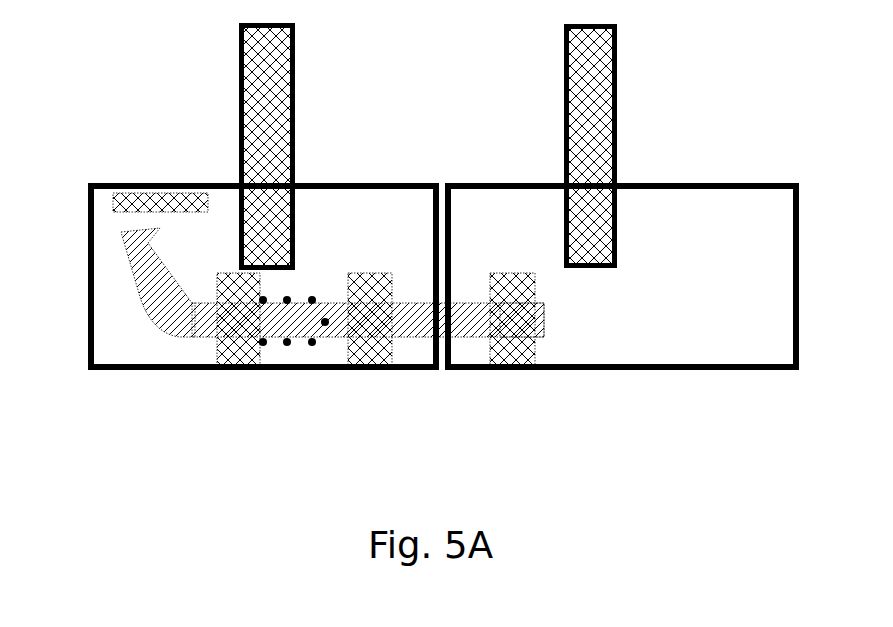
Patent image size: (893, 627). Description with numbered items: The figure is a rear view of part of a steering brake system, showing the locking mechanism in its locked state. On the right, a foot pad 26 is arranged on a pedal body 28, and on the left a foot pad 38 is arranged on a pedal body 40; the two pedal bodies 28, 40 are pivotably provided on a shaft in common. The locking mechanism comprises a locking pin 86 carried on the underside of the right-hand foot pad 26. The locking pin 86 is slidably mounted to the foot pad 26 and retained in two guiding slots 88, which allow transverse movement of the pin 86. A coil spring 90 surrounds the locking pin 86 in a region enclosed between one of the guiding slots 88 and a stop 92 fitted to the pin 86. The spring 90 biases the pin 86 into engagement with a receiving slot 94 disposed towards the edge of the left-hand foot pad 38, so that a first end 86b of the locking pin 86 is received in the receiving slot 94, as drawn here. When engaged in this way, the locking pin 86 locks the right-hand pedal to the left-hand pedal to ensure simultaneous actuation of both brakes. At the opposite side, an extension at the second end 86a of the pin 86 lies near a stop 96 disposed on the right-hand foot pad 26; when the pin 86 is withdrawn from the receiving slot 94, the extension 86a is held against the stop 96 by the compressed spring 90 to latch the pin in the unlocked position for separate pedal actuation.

The foot pad 26 is at (120, 343).
The pedal body 28 is at (272, 165).
The foot pad 38 is at (732, 330).
The pedal body 40 is at (595, 148).
The locking pin 86 is at (192, 320).
The second end 86a is at (128, 250).
The first end 86b is at (532, 317).
The guiding slots 88 is at (233, 352).
The coil spring 90 is at (265, 343).
The stop 92 is at (325, 322).
The receiving slot 94 is at (510, 350).
The stop 96 is at (195, 205).